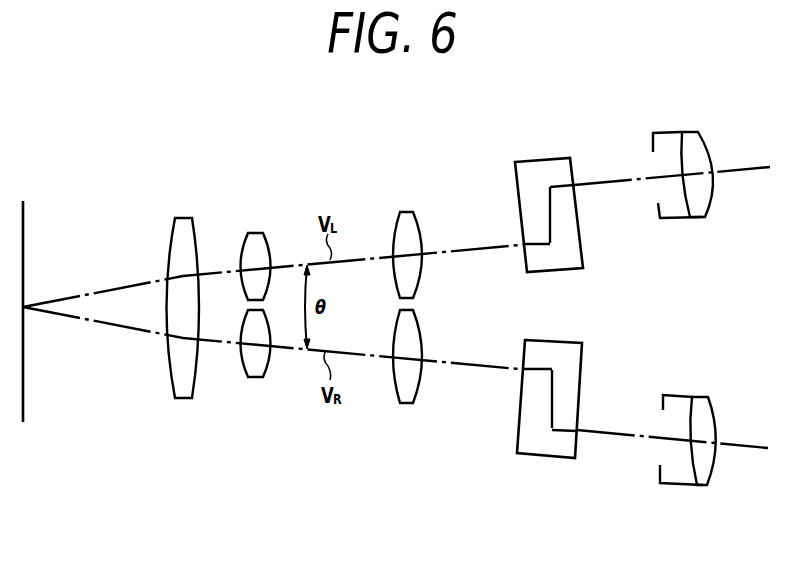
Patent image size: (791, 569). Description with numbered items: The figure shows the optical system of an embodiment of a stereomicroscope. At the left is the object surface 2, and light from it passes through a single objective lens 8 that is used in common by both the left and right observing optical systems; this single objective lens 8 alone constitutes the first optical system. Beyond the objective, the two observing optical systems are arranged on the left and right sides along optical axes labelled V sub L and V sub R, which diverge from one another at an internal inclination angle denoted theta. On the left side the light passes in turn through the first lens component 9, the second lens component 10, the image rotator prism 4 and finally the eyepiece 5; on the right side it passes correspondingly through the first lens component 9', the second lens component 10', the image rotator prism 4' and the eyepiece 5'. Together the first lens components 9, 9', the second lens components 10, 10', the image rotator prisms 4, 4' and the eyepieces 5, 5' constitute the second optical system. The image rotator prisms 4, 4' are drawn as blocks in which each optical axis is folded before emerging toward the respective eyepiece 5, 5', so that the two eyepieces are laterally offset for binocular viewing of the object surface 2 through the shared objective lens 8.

The object surface 2 is at (26, 213).
The single objective lens 8 is at (183, 217).
The first lens component 9 is at (260, 238).
The first lens component 9' is at (263, 370).
The second lens component 10 is at (412, 230).
The second lens component 10' is at (415, 387).
The image rotator prism 4 is at (549, 189).
The image rotator prism 4' is at (549, 432).
The eyepiece 5 is at (683, 145).
The eyepiece 5' is at (688, 474).